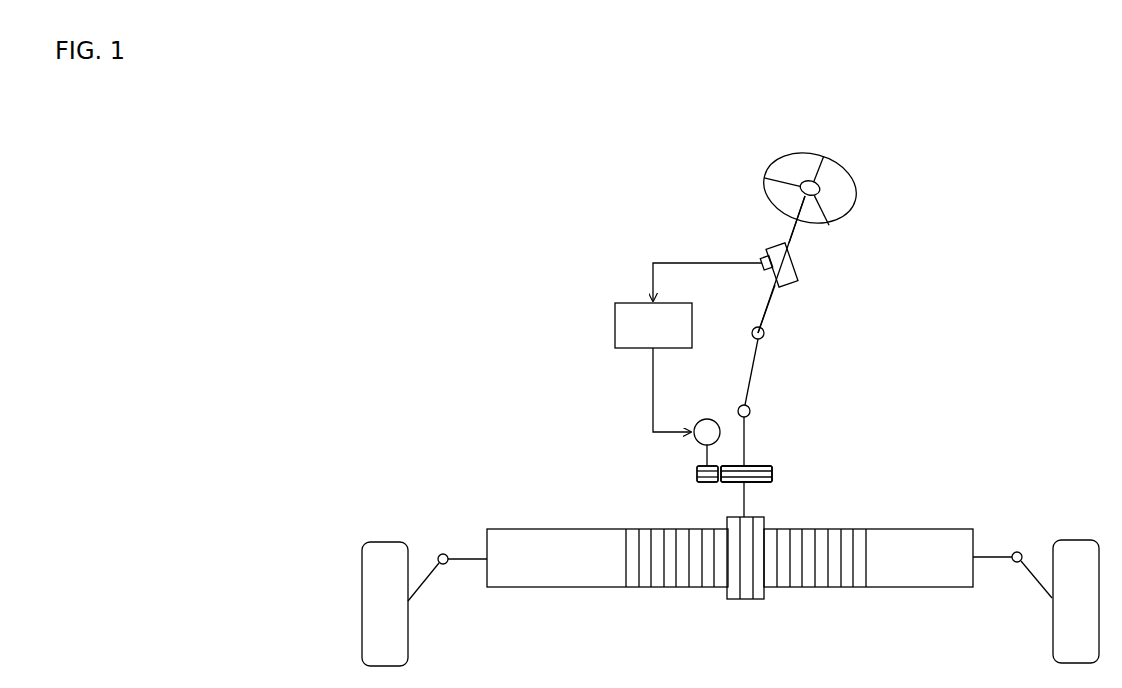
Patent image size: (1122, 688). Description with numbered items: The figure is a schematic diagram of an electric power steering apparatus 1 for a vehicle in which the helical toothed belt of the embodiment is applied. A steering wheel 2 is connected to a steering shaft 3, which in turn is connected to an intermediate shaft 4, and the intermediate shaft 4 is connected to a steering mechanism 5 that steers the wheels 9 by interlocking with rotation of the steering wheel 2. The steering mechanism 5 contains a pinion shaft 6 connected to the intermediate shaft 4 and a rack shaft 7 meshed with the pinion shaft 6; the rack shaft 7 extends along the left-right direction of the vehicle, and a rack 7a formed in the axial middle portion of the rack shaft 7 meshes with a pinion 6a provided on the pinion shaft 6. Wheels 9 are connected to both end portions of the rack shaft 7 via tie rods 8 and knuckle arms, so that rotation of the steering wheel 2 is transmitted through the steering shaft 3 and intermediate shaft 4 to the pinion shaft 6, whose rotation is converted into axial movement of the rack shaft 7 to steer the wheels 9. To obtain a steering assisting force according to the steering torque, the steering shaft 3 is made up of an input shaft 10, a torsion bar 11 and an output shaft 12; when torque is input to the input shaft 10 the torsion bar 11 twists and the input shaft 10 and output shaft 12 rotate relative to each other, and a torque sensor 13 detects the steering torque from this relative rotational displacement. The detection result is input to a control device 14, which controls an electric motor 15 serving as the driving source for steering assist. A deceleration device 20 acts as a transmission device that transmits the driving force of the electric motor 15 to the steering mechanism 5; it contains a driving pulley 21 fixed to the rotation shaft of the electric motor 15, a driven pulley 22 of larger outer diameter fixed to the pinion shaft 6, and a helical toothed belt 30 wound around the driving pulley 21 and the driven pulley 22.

The electric power steering apparatus 1 is at (513, 196).
The steering wheel 2 is at (857, 185).
The steering shaft 3 is at (790, 237).
The intermediate shaft 4 is at (752, 370).
The steering mechanism 5 is at (820, 512).
The pinion shaft 6 is at (747, 495).
The pinion 6a is at (735, 602).
The rack shaft 7 is at (901, 575).
The rack 7a is at (822, 588).
The tie rod 8 is at (427, 584).
The wheel 9 is at (384, 542).
The input shaft 10 is at (795, 235).
The torsion bar 11 is at (793, 272).
The output shaft 12 is at (771, 303).
The torque sensor 13 is at (760, 258).
The control device 14 is at (614, 327).
The electric motor 15 is at (707, 418).
The deceleration device 20 is at (686, 468).
The driving pulley 21 is at (712, 485).
The driven pulley 22 is at (758, 466).
The helical toothed belt 30 is at (771, 474).